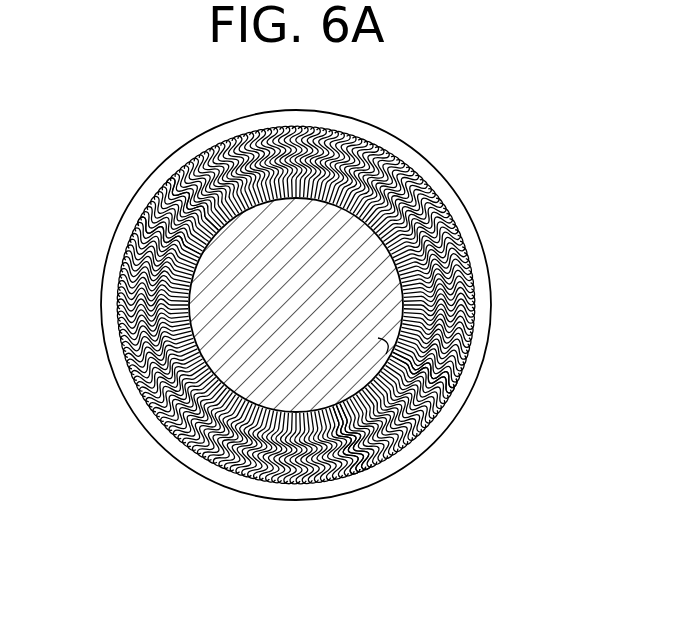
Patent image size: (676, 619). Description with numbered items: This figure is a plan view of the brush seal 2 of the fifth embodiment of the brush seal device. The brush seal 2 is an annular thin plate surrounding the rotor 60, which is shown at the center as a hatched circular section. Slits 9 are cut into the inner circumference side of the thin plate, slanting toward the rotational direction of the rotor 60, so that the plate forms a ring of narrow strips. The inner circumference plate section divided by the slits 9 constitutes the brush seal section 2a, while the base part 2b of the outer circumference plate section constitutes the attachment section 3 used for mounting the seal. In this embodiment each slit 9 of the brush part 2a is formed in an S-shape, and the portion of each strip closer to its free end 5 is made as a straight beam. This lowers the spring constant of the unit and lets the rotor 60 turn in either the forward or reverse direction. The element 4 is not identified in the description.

The brush seal 2 is at (439, 131).
The brush seal section 2a is at (175, 240).
The base part 2b is at (163, 170).
The attachment section 3 is at (462, 192).
The coil winding 4 is at (450, 313).
The free end 5 is at (427, 372).
The slit 9 is at (373, 460).
The rotor 60 is at (311, 312).